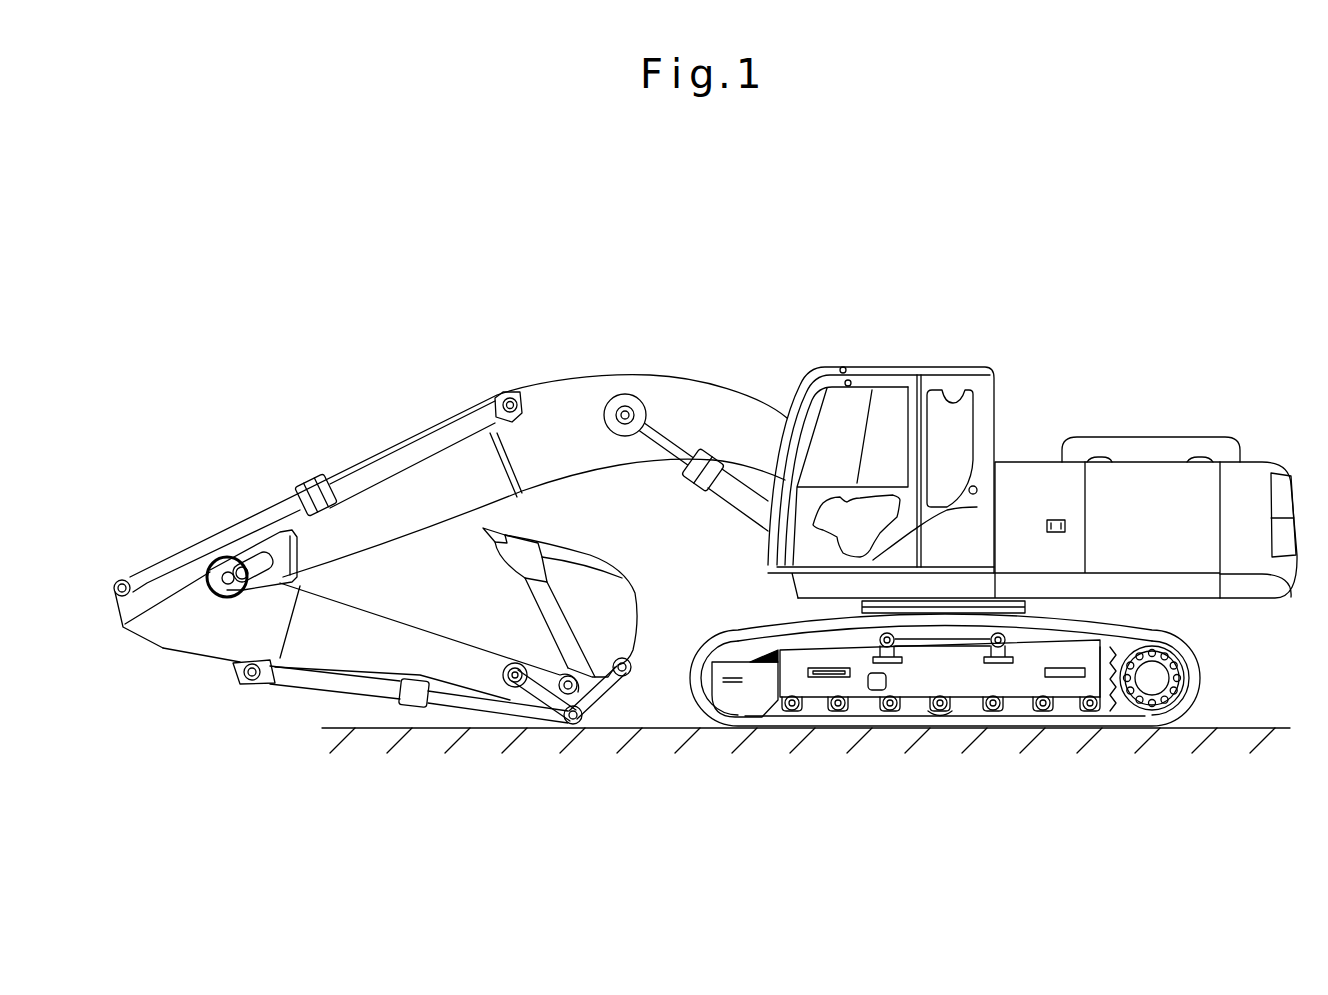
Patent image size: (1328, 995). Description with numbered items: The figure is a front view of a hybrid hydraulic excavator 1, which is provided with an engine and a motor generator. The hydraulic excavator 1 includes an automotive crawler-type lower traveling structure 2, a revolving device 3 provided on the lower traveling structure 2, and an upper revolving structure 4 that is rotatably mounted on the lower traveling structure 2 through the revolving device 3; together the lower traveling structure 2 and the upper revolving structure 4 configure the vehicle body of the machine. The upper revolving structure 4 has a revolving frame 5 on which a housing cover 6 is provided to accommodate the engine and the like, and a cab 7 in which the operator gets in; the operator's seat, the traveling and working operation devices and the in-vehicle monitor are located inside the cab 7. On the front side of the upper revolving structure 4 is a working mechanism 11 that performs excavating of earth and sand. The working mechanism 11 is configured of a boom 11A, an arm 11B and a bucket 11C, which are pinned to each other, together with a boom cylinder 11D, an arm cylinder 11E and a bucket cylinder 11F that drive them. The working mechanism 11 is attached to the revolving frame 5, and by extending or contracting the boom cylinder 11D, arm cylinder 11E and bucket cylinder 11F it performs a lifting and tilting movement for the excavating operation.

The hybrid hydraulic excavator 1 is at (993, 331).
The lower traveling structure 2 is at (1210, 672).
The revolving device 3 is at (860, 604).
The upper revolving structure 4 is at (1055, 417).
The revolving frame 5 is at (1178, 587).
The housing cover 6 is at (1153, 482).
The cab 7 is at (882, 383).
The working mechanism 11 is at (500, 346).
The boom 11A is at (668, 393).
The arm 11B is at (410, 633).
The bucket 11C is at (590, 547).
The boom cylinder 11D is at (745, 498).
The arm cylinder 11E is at (392, 462).
The bucket cylinder 11F is at (310, 680).